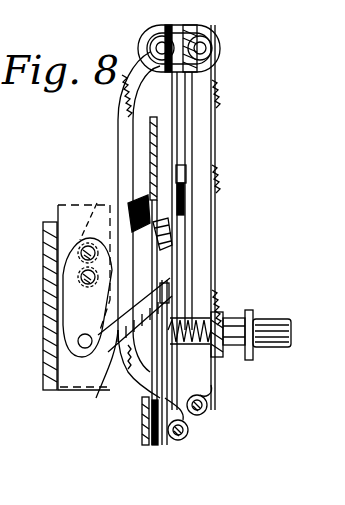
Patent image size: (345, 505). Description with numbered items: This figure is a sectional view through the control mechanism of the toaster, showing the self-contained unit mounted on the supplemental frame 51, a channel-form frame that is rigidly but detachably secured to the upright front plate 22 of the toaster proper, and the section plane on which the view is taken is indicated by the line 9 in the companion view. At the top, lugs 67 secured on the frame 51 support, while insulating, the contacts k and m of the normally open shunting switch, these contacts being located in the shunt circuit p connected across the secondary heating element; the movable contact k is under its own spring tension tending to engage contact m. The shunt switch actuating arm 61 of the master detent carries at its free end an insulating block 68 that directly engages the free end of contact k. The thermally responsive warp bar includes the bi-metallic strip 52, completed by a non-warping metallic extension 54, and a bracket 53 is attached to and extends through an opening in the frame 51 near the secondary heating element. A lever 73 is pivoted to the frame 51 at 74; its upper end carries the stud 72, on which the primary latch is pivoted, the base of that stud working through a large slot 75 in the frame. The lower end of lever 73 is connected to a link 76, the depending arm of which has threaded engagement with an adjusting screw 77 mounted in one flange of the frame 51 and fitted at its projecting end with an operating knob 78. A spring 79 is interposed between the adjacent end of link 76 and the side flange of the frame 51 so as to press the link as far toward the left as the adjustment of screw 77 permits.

The lugs 67 is at (220, 40).
The contact m is at (176, 123).
The movable contact k is at (189, 152).
The shunt circuit p is at (123, 123).
The insulating block 68 is at (133, 200).
The shunt switch actuating arm 61 is at (158, 232).
The slot 75 is at (95, 211).
The stud 72 is at (80, 256).
The pivot 74 is at (85, 279).
The lever 73 is at (83, 303).
The front plate 22 is at (43, 370).
The supplemental frame 51 is at (52, 392).
The link 76 is at (108, 383).
The non-warping metallic extension 54 is at (153, 272).
The spring 79 is at (185, 344).
The adjusting screw 77 is at (222, 317).
The operating knob 78 is at (280, 317).
The bi-metallic strip 52 is at (180, 398).
The bracket 53 is at (143, 417).
The strip 9 is at (154, 445).